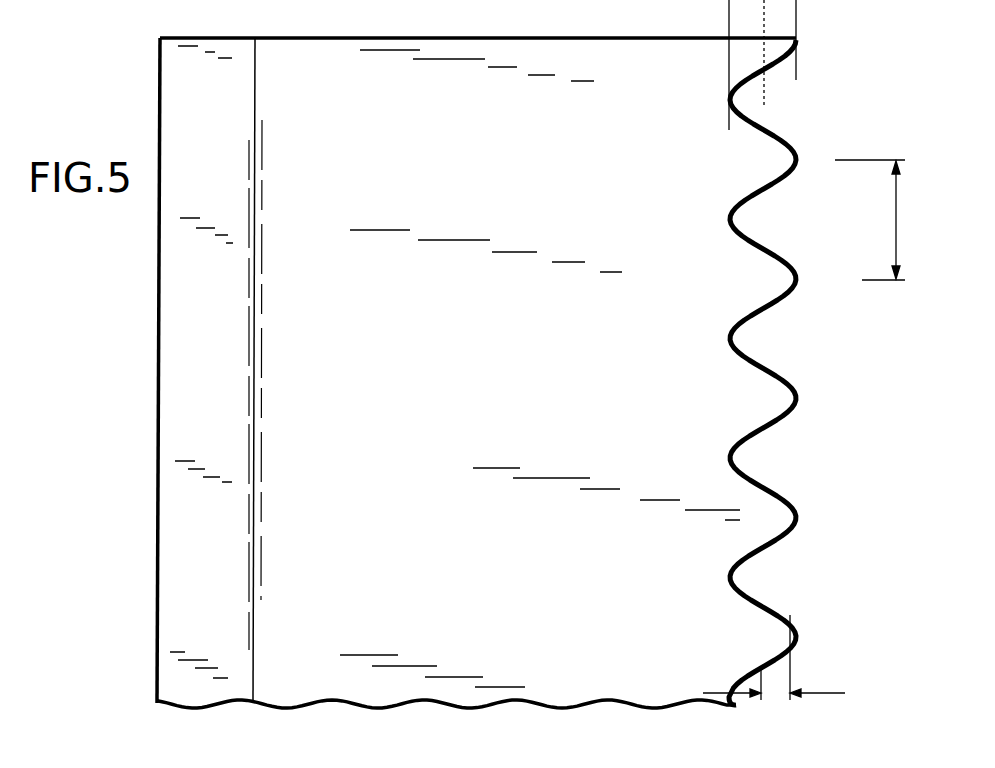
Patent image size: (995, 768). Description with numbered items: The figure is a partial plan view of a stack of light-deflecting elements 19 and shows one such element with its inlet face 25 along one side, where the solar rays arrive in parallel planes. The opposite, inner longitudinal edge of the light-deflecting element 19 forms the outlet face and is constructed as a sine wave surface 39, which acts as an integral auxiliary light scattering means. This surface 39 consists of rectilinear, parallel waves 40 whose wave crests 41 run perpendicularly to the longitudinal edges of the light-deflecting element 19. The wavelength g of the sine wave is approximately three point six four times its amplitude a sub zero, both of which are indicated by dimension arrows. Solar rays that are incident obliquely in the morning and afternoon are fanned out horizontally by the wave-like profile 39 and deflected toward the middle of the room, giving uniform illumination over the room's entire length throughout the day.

The light-deflecting element 19 is at (489, 373).
The inlet face 25 is at (230, 364).
The sine wave surface 39 is at (752, 343).
The waves 40 is at (772, 132).
The wave crests 41 is at (799, 160).